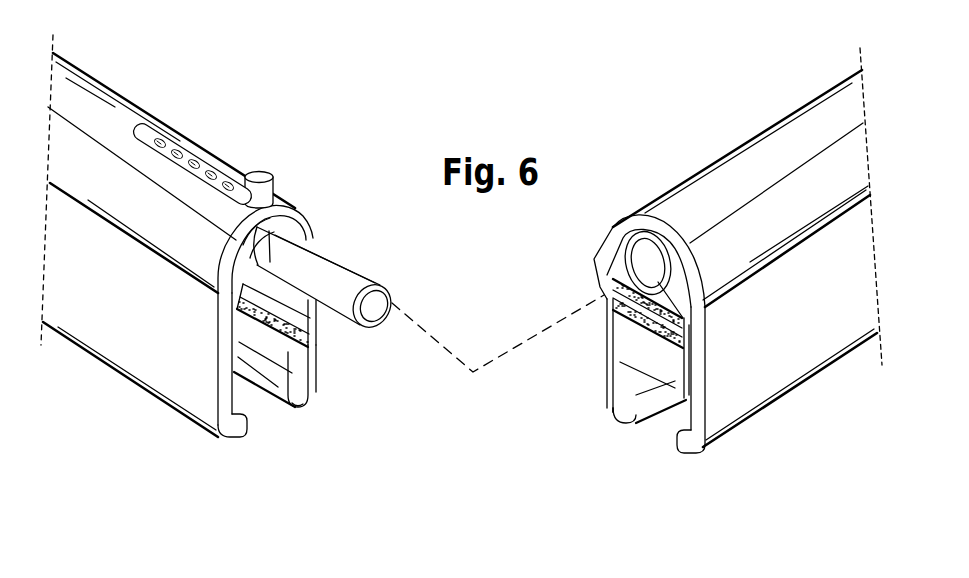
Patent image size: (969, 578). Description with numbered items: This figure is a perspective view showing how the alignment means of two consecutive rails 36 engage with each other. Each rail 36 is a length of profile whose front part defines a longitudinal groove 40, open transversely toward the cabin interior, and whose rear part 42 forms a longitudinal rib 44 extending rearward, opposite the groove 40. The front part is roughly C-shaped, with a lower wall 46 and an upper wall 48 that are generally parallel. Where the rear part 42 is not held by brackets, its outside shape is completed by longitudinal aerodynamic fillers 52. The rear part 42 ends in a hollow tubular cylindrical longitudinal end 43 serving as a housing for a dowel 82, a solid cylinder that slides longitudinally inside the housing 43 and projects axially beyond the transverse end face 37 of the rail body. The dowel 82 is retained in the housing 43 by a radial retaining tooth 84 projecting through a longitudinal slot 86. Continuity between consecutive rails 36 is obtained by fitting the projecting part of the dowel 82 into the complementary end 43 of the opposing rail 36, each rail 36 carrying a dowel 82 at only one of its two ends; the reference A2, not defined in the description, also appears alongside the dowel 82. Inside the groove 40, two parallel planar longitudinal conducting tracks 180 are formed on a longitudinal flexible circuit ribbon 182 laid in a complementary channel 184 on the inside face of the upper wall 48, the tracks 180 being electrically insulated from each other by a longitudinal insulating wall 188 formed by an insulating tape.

The rail 36 is at (152, 86).
The transverse end face 37 is at (320, 377).
The longitudinal groove 40 is at (257, 413).
The rear part 42 is at (292, 214).
The hollow tubular cylindrical longitudinal end 43 is at (283, 238).
The longitudinal rib 44 is at (793, 138).
The lower wall 46 is at (219, 322).
The upper wall 48 is at (316, 352).
The longitudinal aerodynamic fillers 52 is at (167, 225).
The dowel 82 is at (355, 271).
The radial retaining tooth 84 is at (260, 174).
The longitudinal slot 86 is at (202, 155).
The longitudinal conducting track 180 is at (612, 304).
The longitudinal flexible circuit ribbon 182 is at (293, 398).
The complementary channel 184 is at (607, 337).
The longitudinal insulating wall 188 is at (324, 328).
The pivot axis A2 is at (468, 372).